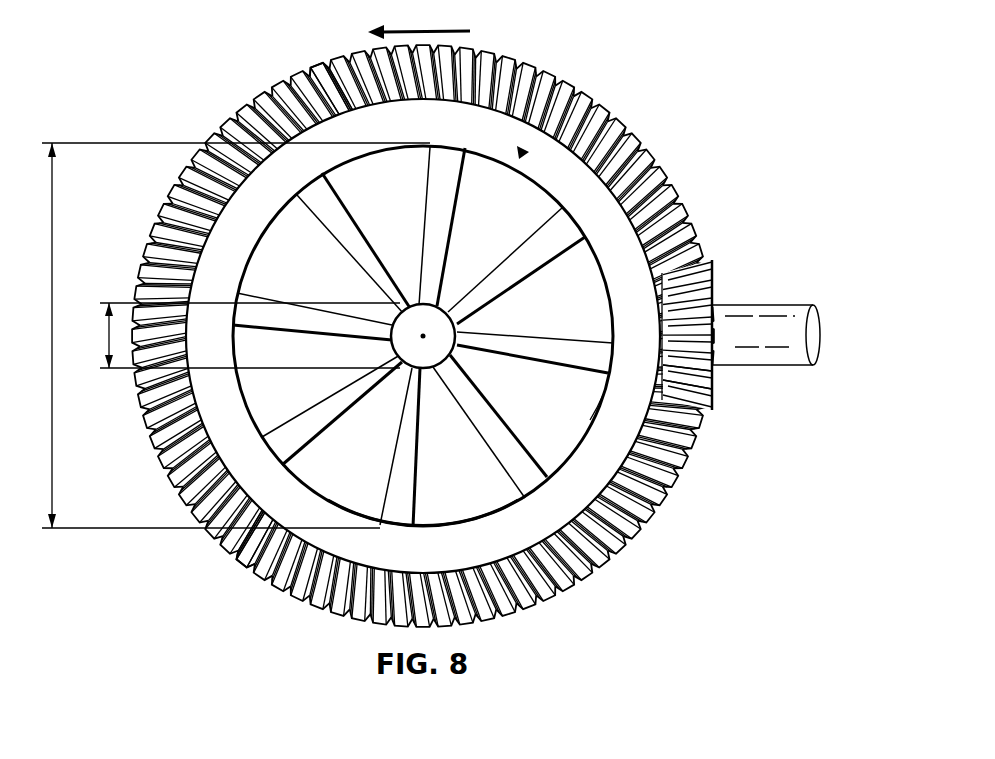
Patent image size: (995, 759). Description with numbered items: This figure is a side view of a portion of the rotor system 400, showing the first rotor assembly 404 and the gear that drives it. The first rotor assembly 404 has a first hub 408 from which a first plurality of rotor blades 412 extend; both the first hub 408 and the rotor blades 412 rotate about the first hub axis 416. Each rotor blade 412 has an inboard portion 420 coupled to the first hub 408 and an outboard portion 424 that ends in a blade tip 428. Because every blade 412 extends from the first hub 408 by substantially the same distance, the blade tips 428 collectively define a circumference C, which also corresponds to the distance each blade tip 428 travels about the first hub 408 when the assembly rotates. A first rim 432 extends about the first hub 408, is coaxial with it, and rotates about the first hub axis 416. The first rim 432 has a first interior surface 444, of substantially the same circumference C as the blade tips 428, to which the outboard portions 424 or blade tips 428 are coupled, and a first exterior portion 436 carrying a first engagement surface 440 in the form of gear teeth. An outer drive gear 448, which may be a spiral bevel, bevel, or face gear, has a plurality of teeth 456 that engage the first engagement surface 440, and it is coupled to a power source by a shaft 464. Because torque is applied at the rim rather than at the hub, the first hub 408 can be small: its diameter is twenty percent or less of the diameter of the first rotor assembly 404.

The rotor system 400 is at (638, 70).
The first rotor assembly 404 is at (545, 70).
The first hub 408 is at (457, 353).
The first plurality of rotor blades 412 is at (540, 262).
The first hub axis 416 is at (423, 336).
The inboard portion 420 is at (464, 287).
The outboard portion 424 is at (554, 207).
The blade tip 428 is at (440, 152).
The first rim 432 is at (246, 98).
The first exterior portion 436 is at (518, 540).
The first engagement surface 440 is at (315, 80).
The first interior surface 444 is at (452, 512).
The outer drive gear 448 is at (724, 274).
The plurality of teeth 456 is at (702, 383).
The shaft 464 is at (780, 303).
The circumference C is at (588, 418).